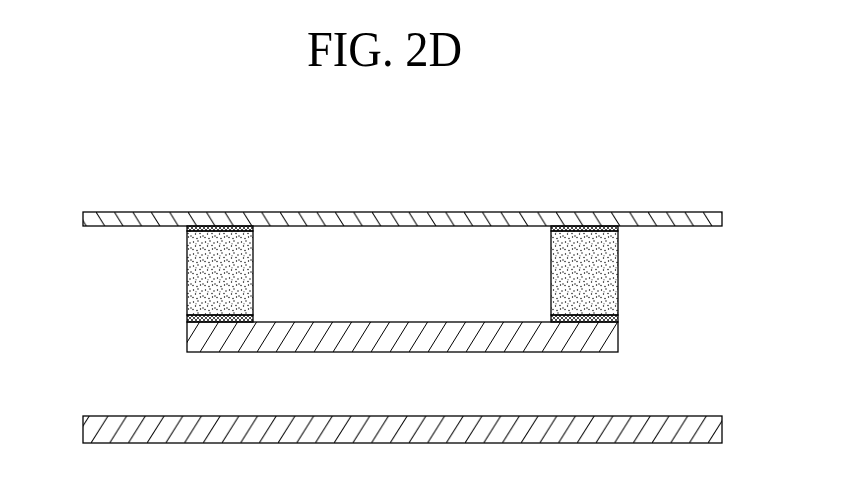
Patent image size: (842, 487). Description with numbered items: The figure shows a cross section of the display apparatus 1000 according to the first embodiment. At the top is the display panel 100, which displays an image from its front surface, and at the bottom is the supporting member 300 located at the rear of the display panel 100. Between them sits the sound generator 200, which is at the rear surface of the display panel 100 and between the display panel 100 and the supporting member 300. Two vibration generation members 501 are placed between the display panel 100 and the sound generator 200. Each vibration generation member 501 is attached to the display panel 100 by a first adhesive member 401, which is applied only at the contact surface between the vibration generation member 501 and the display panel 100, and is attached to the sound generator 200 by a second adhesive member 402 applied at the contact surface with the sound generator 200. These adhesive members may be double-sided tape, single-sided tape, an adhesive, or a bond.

The display apparatus 1000 is at (78, 166).
The display panel 100 is at (708, 218).
The sound generator 200 is at (602, 333).
The supporting member 300 is at (708, 432).
The first adhesive member 401 is at (617, 228).
The second adhesive member 402 is at (615, 318).
The vibration generation member 501 is at (600, 269).